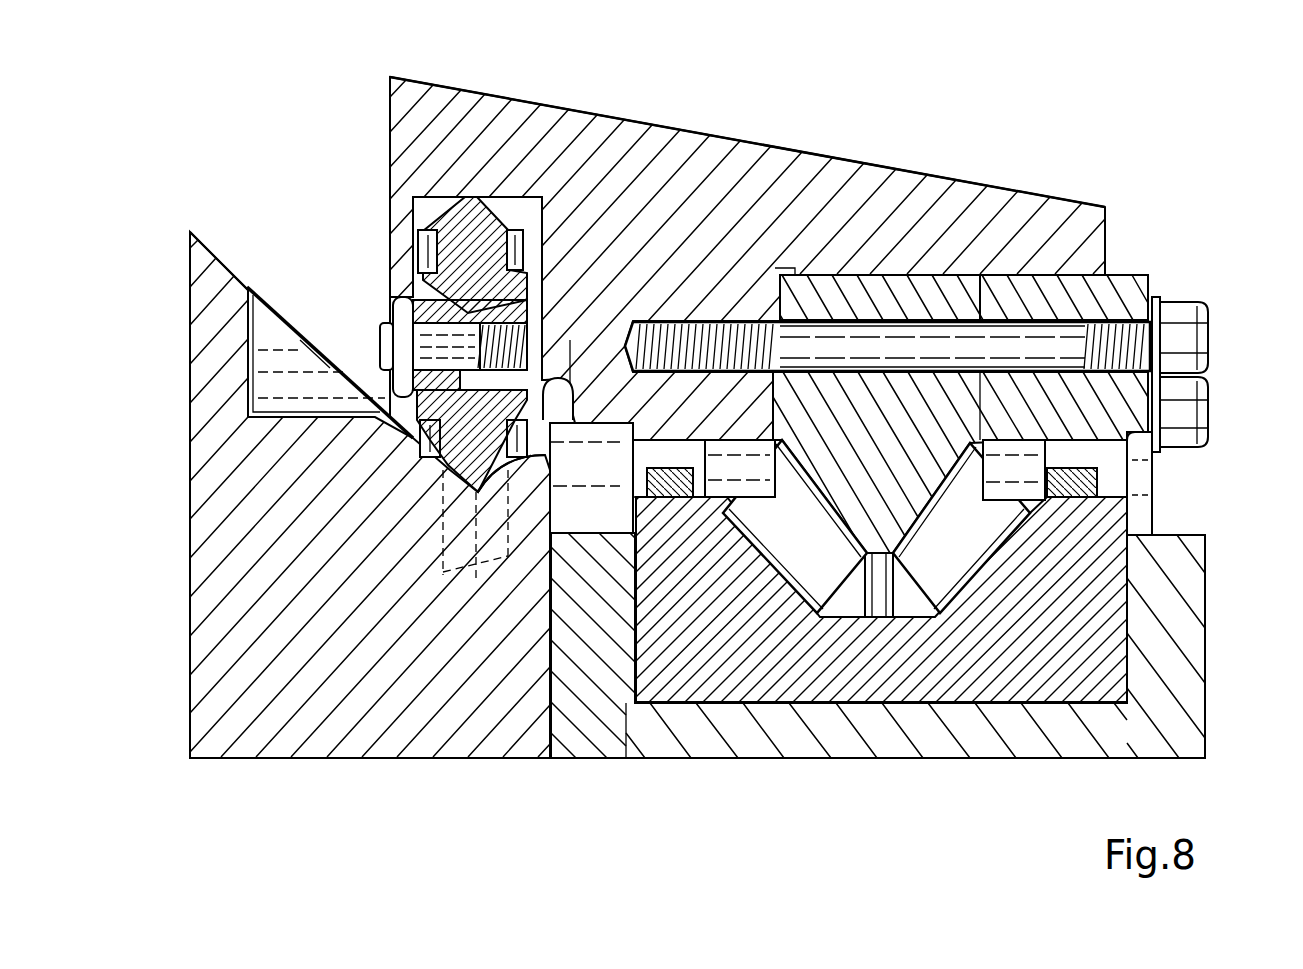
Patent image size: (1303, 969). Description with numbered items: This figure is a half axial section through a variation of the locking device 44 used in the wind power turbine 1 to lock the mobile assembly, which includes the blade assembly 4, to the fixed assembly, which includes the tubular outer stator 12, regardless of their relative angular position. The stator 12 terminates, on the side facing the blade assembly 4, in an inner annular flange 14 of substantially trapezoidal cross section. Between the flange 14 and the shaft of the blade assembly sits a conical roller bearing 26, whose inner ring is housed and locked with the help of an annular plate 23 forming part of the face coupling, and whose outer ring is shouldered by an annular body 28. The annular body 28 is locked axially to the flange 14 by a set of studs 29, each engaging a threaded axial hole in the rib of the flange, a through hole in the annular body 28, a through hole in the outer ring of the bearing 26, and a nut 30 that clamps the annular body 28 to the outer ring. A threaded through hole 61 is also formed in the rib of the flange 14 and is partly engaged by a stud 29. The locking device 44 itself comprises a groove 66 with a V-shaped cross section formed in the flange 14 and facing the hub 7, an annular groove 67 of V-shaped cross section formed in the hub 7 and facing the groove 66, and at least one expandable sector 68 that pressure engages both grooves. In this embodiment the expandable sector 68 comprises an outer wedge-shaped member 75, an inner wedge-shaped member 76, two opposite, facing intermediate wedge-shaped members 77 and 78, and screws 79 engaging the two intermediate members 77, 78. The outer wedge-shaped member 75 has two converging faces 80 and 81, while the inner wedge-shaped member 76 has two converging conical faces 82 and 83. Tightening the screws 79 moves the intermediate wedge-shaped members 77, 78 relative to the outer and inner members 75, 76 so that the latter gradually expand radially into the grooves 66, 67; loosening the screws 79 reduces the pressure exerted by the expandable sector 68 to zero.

The wind power turbine 1 is at (290, 150).
The blade assembly 4 is at (263, 243).
The hub 7 is at (218, 297).
The tubular outer stator 12 is at (813, 147).
The inner annular flange 14 is at (383, 140).
The annular plate 23 is at (587, 730).
The conical roller bearing 26 is at (897, 270).
The annular body 28 is at (1120, 297).
The stud 29 is at (1037, 340).
The nut 30 is at (1177, 343).
The locking device 44 is at (340, 272).
The threaded through hole 61 is at (710, 323).
The groove 66 is at (413, 237).
The annular groove 67 is at (413, 433).
The expandable sector 68 is at (337, 313).
The outer wedge-shaped member 75 is at (483, 260).
The inner wedge-shaped member 76 is at (548, 508).
The intermediate wedge-shaped member 77 is at (420, 290).
The intermediate wedge-shaped member 78 is at (530, 250).
The screw 79 is at (382, 337).
The converging face 80 is at (398, 300).
The converging face 81 is at (590, 300).
The converging conical face 82 is at (400, 378).
The converging conical face 83 is at (570, 392).